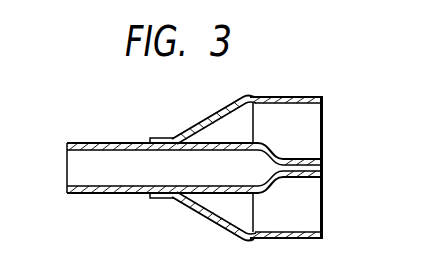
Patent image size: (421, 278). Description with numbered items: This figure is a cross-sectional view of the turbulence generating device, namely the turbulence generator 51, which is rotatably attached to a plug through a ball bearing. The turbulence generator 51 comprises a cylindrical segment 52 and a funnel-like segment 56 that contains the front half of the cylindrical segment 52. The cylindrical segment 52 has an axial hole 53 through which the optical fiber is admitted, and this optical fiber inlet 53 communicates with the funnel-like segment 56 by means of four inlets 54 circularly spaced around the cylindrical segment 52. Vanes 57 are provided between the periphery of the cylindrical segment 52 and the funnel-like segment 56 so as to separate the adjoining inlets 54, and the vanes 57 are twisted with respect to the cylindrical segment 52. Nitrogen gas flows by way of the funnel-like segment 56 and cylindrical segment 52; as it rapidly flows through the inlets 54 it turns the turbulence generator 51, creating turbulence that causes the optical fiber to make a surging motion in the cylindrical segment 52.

The turbulence generator 51 is at (306, 93).
The cylindrical segment 52 is at (119, 143).
The axial hole 53 is at (77, 169).
The inlets 54 is at (197, 143).
The funnel-like segment 56 is at (323, 99).
The vanes 57 is at (227, 117).